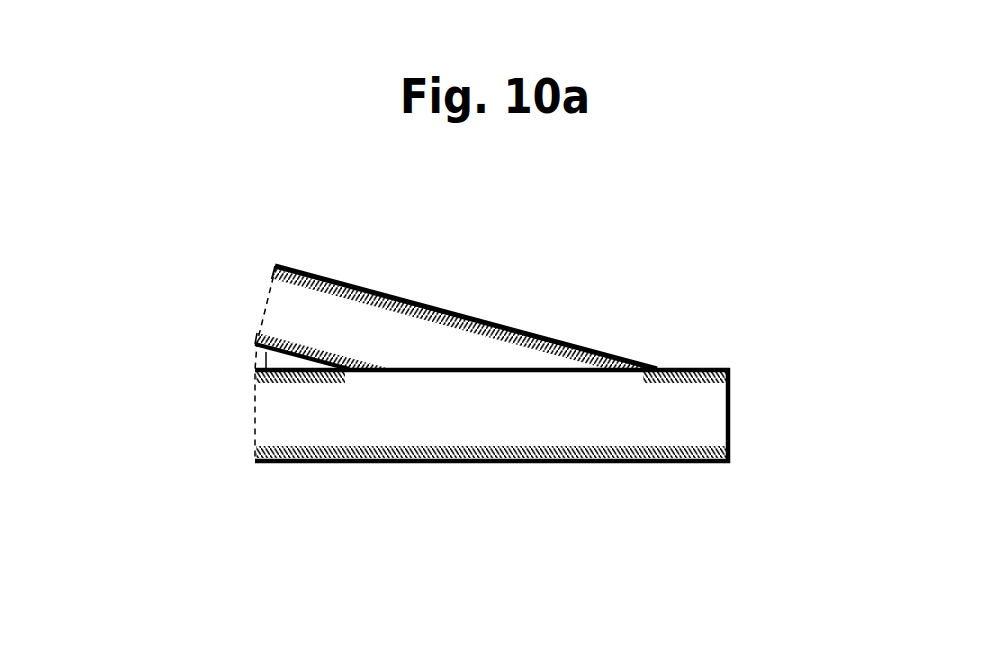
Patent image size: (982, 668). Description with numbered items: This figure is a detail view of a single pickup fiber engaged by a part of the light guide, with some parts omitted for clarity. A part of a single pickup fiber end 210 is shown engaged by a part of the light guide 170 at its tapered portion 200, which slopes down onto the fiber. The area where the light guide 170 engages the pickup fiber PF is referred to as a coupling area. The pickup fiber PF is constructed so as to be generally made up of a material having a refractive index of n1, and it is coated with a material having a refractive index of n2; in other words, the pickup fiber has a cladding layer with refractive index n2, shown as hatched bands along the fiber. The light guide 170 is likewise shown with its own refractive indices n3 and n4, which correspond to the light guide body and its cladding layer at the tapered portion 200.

The light guide 170 is at (483, 318).
The tapered portion 200 is at (553, 340).
The pickup fiber end 210 is at (733, 452).
The refractive index of pickup fiber material n1 is at (511, 410).
The refractive index of pickup fiber cladding n2 is at (490, 463).
The refractive index of light guide n3 is at (280, 307).
The refractive index of light guide cladding n4 is at (253, 338).
The pickup fiber PF is at (253, 415).